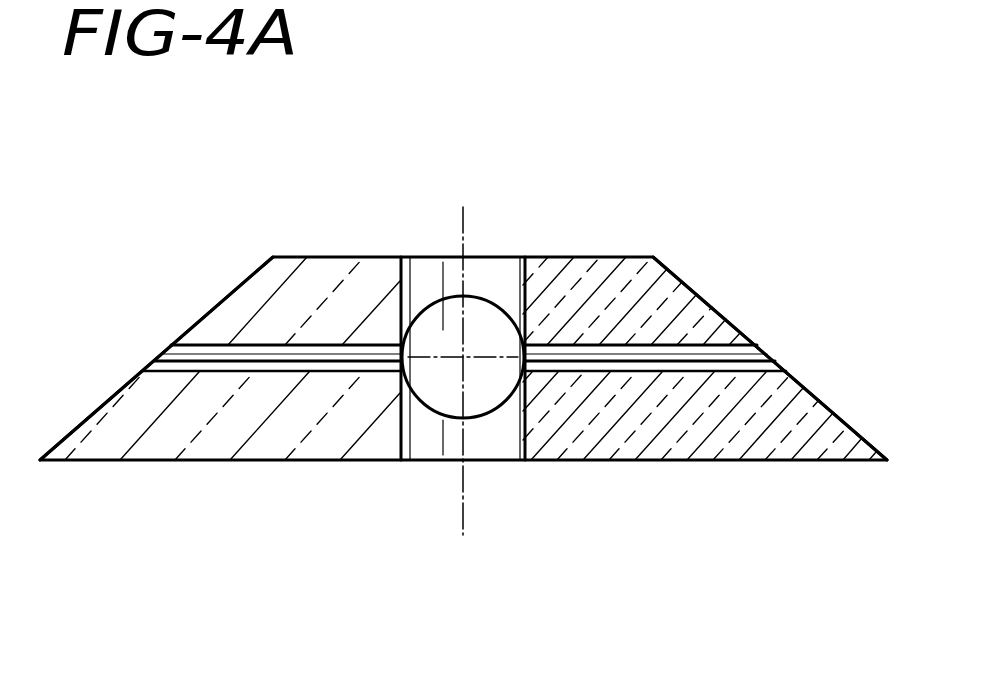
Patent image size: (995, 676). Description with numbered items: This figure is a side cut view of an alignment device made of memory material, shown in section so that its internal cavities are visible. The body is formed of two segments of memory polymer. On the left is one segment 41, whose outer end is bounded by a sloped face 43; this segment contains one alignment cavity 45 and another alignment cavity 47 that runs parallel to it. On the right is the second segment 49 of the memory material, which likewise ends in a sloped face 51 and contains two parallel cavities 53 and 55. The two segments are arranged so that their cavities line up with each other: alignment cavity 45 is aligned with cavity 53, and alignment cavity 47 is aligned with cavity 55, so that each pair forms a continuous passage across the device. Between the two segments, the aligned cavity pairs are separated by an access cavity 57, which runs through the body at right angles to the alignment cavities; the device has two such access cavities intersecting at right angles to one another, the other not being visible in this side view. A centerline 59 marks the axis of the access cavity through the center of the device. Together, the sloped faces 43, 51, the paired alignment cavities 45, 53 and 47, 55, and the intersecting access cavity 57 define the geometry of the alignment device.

The memory polymer segment 41 is at (242, 303).
The sloped face 43 is at (132, 379).
The alignment cavity 45 is at (277, 366).
The parallel alignment cavity 47 is at (330, 347).
The second memory material segment 49 is at (675, 303).
The sloped face 51 is at (795, 377).
The parallel cavity 53 is at (612, 364).
The parallel cavity 55 is at (560, 348).
The access cavity 57 is at (452, 306).
The central axis 59 is at (463, 500).